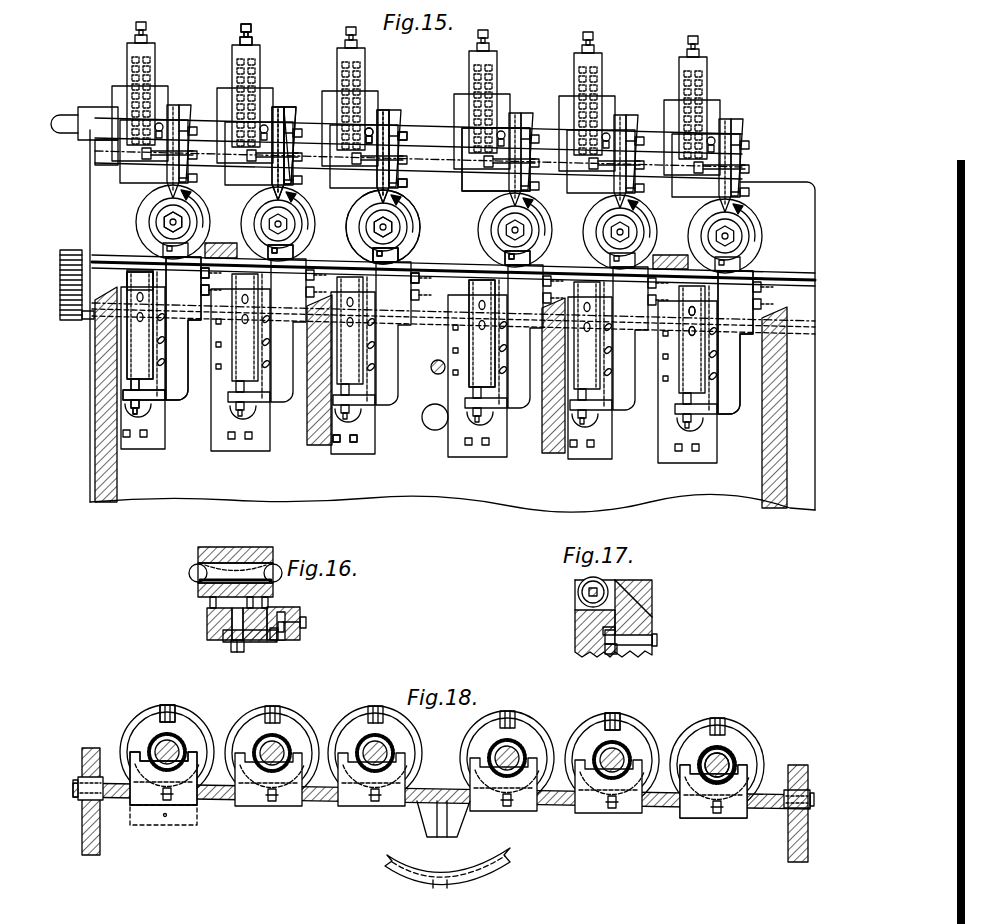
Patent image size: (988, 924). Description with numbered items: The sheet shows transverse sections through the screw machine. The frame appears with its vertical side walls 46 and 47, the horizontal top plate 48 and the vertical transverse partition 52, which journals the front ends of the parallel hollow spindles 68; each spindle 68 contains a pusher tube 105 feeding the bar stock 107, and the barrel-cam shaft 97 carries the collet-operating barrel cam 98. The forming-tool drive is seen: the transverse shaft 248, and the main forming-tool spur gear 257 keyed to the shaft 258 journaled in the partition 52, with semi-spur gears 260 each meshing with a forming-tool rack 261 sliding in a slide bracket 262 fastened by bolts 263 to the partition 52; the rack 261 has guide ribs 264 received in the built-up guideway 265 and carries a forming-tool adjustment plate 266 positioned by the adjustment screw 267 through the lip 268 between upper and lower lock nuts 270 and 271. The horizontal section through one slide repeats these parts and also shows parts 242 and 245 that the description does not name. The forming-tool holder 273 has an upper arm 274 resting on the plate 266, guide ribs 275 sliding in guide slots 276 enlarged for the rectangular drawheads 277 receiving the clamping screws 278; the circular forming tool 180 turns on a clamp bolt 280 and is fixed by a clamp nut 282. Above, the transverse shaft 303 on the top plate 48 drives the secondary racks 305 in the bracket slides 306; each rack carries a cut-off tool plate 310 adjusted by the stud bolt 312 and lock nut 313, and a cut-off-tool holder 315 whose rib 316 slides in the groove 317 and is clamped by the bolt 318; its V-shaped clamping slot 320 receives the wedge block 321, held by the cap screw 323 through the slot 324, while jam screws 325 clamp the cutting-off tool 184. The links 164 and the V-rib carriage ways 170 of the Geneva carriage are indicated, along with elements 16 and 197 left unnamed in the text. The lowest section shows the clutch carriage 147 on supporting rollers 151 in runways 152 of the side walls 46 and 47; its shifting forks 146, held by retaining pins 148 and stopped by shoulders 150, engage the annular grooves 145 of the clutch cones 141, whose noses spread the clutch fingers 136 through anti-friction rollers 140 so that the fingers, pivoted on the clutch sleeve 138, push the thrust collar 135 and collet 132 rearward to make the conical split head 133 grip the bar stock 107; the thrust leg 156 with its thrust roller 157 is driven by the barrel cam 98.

In FIG. 15, the shaft 16 is at (456, 322).
In FIG. 15, the vertical side wall 46 is at (773, 512).
In FIG. 18, the vertical side wall 46 is at (798, 764).
In FIG. 15, the vertical side wall 47 is at (104, 506).
In FIG. 18, the vertical side wall 47 is at (88, 748).
In FIG. 15, the horizontal top plate 48 is at (432, 171).
In FIG. 15, the vertical transverse partition 52 is at (795, 202).
In FIG. 15, the spindle 68 is at (138, 212).
In FIG. 18, the spindle 68 is at (704, 745).
In FIG. 15, the barrel-cam shaft 97 is at (428, 423).
In FIG. 18, the collet-operating barrel cam 98 is at (462, 872).
In FIG. 18, the pusher tube 105 is at (728, 758).
In FIG. 15, the bar stock 107 is at (163, 224).
In FIG. 18, the bar stock 107 is at (734, 764).
In FIG. 15, the collet 132 is at (373, 229).
In FIG. 18, the collet 132 is at (722, 755).
In FIG. 15, the conical split head 133 is at (360, 211).
In FIG. 18, the thrust collar 135 is at (160, 706).
In FIG. 18, the clutch fingers 136 is at (630, 729).
In FIG. 18, the clutch sleeve 138 is at (136, 714).
In FIG. 18, the anti-friction rollers 140 is at (620, 715).
In FIG. 18, the clutch cone 141 is at (181, 735).
In FIG. 18, the annular groove 145 is at (362, 738).
In FIG. 18, the clutch shifting fork 146 is at (150, 826).
In FIG. 18, the clutch carriage 147 is at (224, 800).
In FIG. 18, the retaining pin 148 is at (278, 802).
In FIG. 18, the stop shoulders 150 is at (132, 762).
In FIG. 18, the supporting rollers 151 is at (84, 782).
In FIG. 18, the runways 152 is at (78, 791).
In FIG. 18, the thrust leg 156 is at (458, 831).
In FIG. 18, the thrust roller 157 is at (472, 858).
In FIG. 15, the links 164 is at (666, 254).
In FIG. 15, the carriage ways 170 is at (301, 272).
In FIG. 15, the circular forming tool 180 is at (405, 249).
In FIG. 17, the circular forming tool 180 is at (580, 580).
In FIG. 15, the cut-off tool 184 is at (280, 106).
In FIG. 15, the pin 197 is at (433, 373).
In FIG. 15, the bolt 242 is at (688, 341).
In FIG. 16, the bolt 242 is at (236, 653).
In FIG. 16, the washer 245 is at (282, 636).
In FIG. 16, the transverse shaft 248 is at (307, 622).
In FIG. 15, the main forming-tool spur gear 257 is at (88, 310).
In FIG. 15, the transverse shaft 258 is at (69, 249).
In FIG. 16, the transverse shaft 258 is at (192, 570).
In FIG. 16, the semi-spur gears 260 is at (258, 547).
In FIG. 15, the forming-tool rack 261 is at (130, 345).
In FIG. 16, the forming-tool rack 261 is at (222, 602).
In FIG. 15, the slide bracket 262 is at (262, 451).
In FIG. 16, the slide bracket 262 is at (207, 610).
In FIG. 15, the bolts 263 is at (352, 454).
In FIG. 15, the guide ribs 264 is at (128, 280).
In FIG. 16, the guide ribs 264 is at (215, 614).
In FIG. 15, the guideway 265 is at (470, 354).
In FIG. 16, the guideway 265 is at (233, 641).
In FIG. 15, the forming-tool adjustment plate 266 is at (182, 378).
In FIG. 16, the forming-tool adjustment plate 266 is at (258, 643).
In FIG. 17, the forming-tool adjustment plate 266 is at (576, 631).
In FIG. 15, the adjustment screw 267 is at (142, 409).
In FIG. 15, the horizontal lip 268 is at (123, 393).
In FIG. 15, the upper lock nut 270 is at (127, 385).
In FIG. 15, the lower lock nut 271 is at (128, 405).
In FIG. 15, the forming-tool holder 273 is at (212, 250).
In FIG. 16, the forming-tool holder 273 is at (301, 638).
In FIG. 17, the forming-tool holder 273 is at (654, 601).
In FIG. 15, the upper arm 274 is at (164, 251).
In FIG. 17, the upper arm 274 is at (642, 580).
In FIG. 15, the guide ribs 275 is at (206, 279).
In FIG. 17, the guide ribs 275 is at (626, 658).
In FIG. 15, the guide slots 276 is at (205, 296).
In FIG. 16, the guide slots 276 is at (283, 612).
In FIG. 17, the guide slots 276 is at (649, 627).
In FIG. 16, the drawhead 277 is at (276, 638).
In FIG. 17, the drawhead 277 is at (607, 656).
In FIG. 15, the clamping screw 278 is at (420, 279).
In FIG. 17, the clamping screw 278 is at (659, 640).
In FIG. 15, the clamp bolt 280 is at (532, 255).
In FIG. 17, the clamp bolt 280 is at (585, 592).
In FIG. 15, the clamp nut 282 is at (300, 249).
In FIG. 15, the transverse shaft 303 is at (63, 112).
In FIG. 15, the secondary rack 305 is at (237, 68).
In FIG. 15, the housing 306 is at (218, 97).
In FIG. 15, the cut-off tool plate 310 is at (127, 53).
In FIG. 15, the adjustment stud bolt 312 is at (241, 28).
In FIG. 15, the upper lock nut 313 is at (239, 42).
In FIG. 15, the cut-off-tool holder 315 is at (118, 172).
In FIG. 15, the square-faced rib 316 is at (104, 162).
In FIG. 15, the square shouldered groove 317 is at (146, 160).
In FIG. 15, the clamping bolt 318 is at (194, 157).
In FIG. 15, the clamping slot 320 is at (294, 120).
In FIG. 15, the wedge block 321 is at (290, 112).
In FIG. 15, the clamping cap screw 323 is at (402, 132).
In FIG. 15, the slot 324 is at (370, 130).
In FIG. 15, the jam screws 325 is at (403, 178).